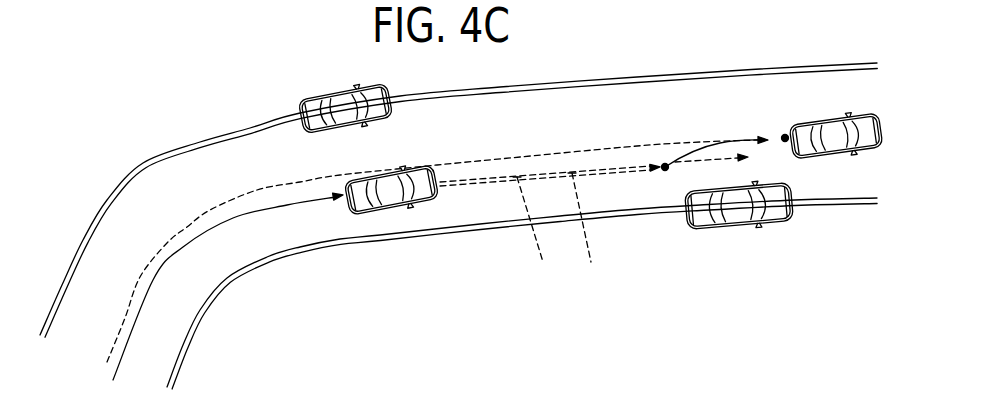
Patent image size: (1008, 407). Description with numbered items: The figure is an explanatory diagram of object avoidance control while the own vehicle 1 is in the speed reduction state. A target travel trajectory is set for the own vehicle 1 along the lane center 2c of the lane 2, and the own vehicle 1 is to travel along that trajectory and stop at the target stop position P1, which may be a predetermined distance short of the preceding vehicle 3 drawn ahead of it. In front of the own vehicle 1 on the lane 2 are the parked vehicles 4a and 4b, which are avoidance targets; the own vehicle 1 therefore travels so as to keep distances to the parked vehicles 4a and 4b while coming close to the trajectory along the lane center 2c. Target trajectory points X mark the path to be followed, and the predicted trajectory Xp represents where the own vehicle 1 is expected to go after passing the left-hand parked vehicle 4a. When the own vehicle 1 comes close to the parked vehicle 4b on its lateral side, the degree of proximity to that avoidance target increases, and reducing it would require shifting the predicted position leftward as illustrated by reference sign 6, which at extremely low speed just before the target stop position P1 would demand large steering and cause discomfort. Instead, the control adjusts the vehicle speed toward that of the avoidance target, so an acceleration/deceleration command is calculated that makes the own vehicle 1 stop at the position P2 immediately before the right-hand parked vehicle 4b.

The own vehicle 1 is at (387, 230).
The lane 2 is at (102, 248).
The lane center 2c is at (209, 210).
The preceding vehicle 3 is at (837, 157).
The parked vehicle 4a is at (300, 106).
The parked vehicle 4b is at (725, 228).
The leftward shift of predicted position 6 is at (700, 150).
The target stop position P1 is at (787, 145).
The stop position immediately before avoidance target P2 is at (658, 200).
The target trajectory points X is at (533, 235).
The predicted trajectory Xp is at (589, 232).